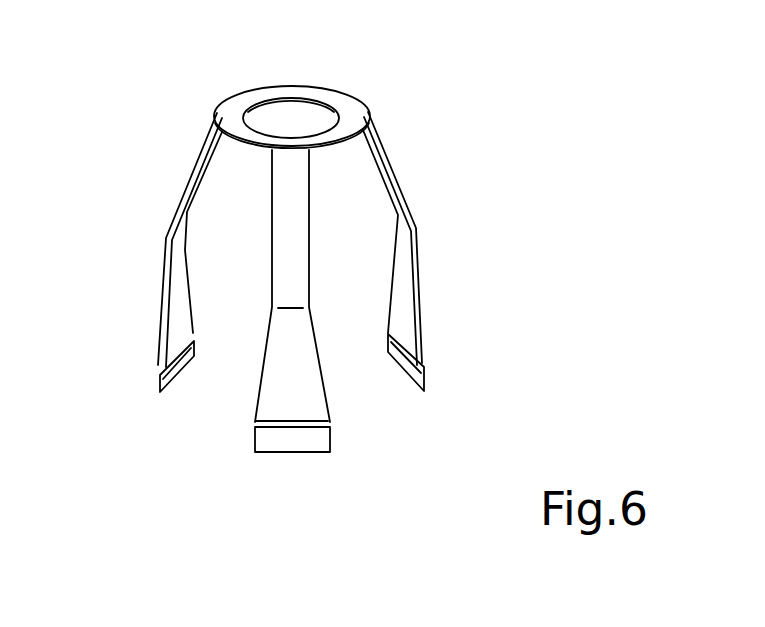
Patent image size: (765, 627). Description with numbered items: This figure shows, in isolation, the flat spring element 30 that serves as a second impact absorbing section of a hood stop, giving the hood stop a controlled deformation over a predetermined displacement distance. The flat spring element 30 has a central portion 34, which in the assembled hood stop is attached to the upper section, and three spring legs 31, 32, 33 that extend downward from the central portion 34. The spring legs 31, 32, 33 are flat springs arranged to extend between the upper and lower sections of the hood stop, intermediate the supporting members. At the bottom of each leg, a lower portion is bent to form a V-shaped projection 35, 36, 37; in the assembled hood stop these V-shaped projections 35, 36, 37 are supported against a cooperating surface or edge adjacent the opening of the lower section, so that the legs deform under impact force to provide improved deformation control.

The flat spring element 30 is at (433, 173).
The spring leg 31 is at (410, 272).
The spring leg 32 is at (318, 372).
The spring leg 33 is at (178, 285).
The central portion 34 is at (343, 102).
The V-shaped projection 35 is at (433, 367).
The V-shaped projection 36 is at (253, 430).
The V-shaped projection 37 is at (152, 371).